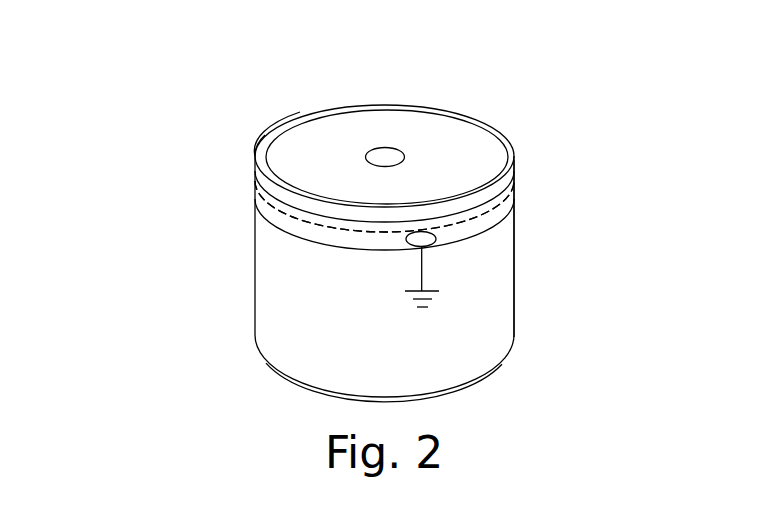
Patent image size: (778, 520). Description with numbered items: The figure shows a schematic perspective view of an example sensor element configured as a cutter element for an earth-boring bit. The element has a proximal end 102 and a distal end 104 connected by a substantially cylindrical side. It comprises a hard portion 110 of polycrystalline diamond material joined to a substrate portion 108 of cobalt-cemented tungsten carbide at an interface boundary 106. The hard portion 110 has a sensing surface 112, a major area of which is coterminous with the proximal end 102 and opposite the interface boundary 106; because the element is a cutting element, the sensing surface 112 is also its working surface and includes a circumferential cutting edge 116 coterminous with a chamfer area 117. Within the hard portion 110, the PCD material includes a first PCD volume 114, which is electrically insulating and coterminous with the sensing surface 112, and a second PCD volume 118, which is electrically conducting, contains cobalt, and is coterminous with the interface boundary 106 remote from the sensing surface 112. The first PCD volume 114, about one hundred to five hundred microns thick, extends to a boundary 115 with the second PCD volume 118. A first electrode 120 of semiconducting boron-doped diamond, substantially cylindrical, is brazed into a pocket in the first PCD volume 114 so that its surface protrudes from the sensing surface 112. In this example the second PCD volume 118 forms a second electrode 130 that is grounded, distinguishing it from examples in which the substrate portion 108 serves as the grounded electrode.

The proximal end 102 is at (327, 137).
The distal end 104 is at (280, 378).
The interface boundary 106 is at (497, 227).
The substrate portion 108 is at (490, 302).
The hard portion 110 is at (518, 188).
The sensing surface 112 is at (443, 140).
The first PCD volume 114 is at (253, 177).
The boundary 115 is at (313, 222).
The circumferential cutting edge 116 is at (272, 138).
The chamfer area 117 is at (255, 155).
The second PCD volume 118 is at (270, 207).
The first electrode 120 is at (383, 157).
The second electrode 130 is at (437, 242).